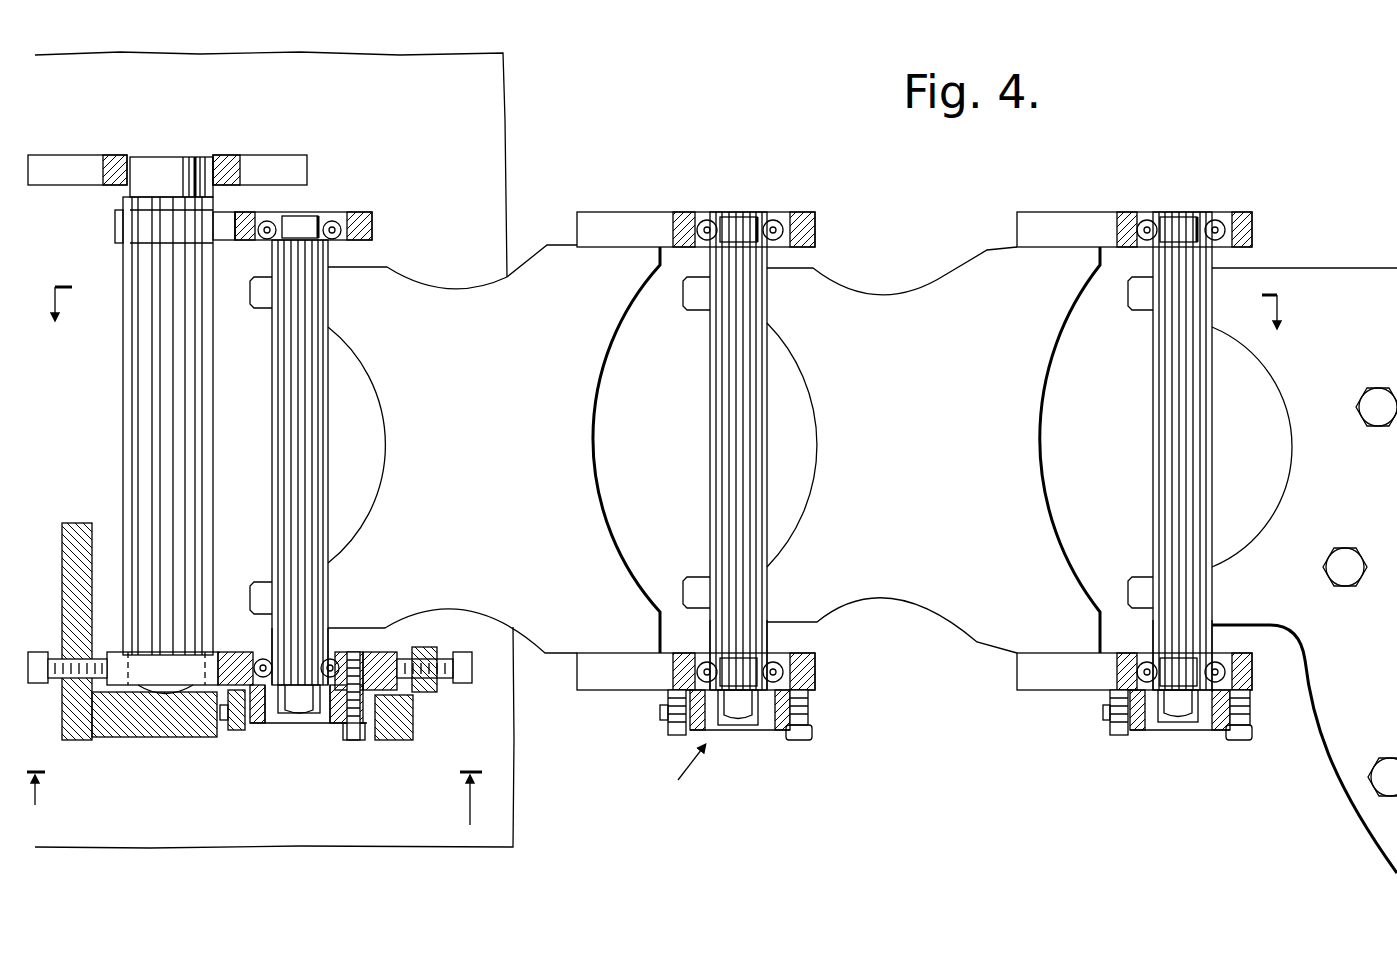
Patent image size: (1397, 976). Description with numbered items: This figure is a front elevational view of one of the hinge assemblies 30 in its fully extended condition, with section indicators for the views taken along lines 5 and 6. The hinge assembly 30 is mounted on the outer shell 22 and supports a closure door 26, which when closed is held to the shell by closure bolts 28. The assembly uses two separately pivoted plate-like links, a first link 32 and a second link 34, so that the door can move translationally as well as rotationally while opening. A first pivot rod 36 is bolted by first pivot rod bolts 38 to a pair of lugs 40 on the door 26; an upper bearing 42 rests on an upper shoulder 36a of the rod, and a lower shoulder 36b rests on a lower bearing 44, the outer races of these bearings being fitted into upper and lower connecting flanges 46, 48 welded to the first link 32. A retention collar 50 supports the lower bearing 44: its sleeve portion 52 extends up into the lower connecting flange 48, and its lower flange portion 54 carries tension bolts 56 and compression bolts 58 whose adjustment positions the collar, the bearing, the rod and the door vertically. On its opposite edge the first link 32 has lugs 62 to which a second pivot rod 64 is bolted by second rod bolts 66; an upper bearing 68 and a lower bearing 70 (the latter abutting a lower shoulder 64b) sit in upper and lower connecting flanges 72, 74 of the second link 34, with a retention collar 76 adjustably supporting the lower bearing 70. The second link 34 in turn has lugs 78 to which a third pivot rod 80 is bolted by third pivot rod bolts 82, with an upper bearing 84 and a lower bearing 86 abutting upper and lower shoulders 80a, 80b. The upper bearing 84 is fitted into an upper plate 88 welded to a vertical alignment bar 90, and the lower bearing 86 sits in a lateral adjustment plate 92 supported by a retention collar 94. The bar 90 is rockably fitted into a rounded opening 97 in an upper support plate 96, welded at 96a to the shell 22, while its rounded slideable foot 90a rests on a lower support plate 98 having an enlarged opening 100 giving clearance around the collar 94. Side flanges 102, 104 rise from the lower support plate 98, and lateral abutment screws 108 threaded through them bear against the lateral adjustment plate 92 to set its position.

The outer shell 22 is at (497, 173).
The closure door 26 is at (1343, 268).
The closure bolts 28 is at (1362, 396).
The hinge assembly 30 is at (682, 776).
The first link 32 is at (912, 602).
The second link 34 is at (470, 298).
The first pivot rod 36 is at (1152, 430).
The upper shoulder 36a is at (1178, 224).
The lower shoulder 36b is at (1210, 650).
The first pivot rod bolts 38 is at (1125, 306).
The lugs 40 is at (1223, 327).
The upper bearing 42 is at (1216, 222).
The lower bearing 44 is at (1138, 662).
The upper connecting flange 46 is at (1082, 224).
The lower connecting flange 48 is at (1055, 690).
The retention collar 50 is at (1221, 732).
The sleeve portion 52 is at (1212, 718).
The lower flange portion 54 is at (1252, 716).
The tension bolts 56 is at (1242, 738).
The compression bolts 58 is at (1118, 733).
The lugs 62 is at (800, 275).
The second pivot rod 64 is at (752, 215).
The lower shoulder 64b is at (770, 612).
The second rod bolts 66 is at (685, 306).
The upper bearing 68 is at (708, 219).
The lower bearing 70 is at (700, 652).
The upper connecting flange 72 is at (637, 224).
The lower connecting flange 74 is at (630, 690).
The retention collar 76 is at (812, 712).
The lugs 78 is at (338, 298).
The third pivot rod 80 is at (275, 433).
The upper shoulder 80a is at (302, 214).
The lower shoulder 80b is at (332, 632).
The third pivot rod bolts 82 is at (258, 310).
The upper bearing 84 is at (330, 218).
The lower bearing 86 is at (262, 658).
The upper plate 88 is at (375, 212).
The vertical alignment bar 90 is at (123, 433).
The slideable foot 90a is at (165, 697).
The lateral adjustment plate 92 is at (385, 650).
The retention collar 94 is at (348, 742).
The upper support plate 96 is at (303, 155).
The weld 96a is at (100, 152).
The opening 97 is at (206, 157).
The lower support plate 98 is at (108, 740).
The enlarged opening 100 is at (232, 732).
The side flange 102 is at (65, 542).
The side flange 104 is at (440, 705).
The lateral abutment screws 108 is at (40, 652).
The section line 5- 5 is at (670, 319).
The section line 6- 6 is at (254, 785).